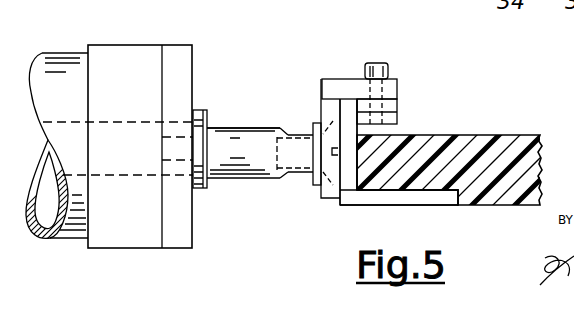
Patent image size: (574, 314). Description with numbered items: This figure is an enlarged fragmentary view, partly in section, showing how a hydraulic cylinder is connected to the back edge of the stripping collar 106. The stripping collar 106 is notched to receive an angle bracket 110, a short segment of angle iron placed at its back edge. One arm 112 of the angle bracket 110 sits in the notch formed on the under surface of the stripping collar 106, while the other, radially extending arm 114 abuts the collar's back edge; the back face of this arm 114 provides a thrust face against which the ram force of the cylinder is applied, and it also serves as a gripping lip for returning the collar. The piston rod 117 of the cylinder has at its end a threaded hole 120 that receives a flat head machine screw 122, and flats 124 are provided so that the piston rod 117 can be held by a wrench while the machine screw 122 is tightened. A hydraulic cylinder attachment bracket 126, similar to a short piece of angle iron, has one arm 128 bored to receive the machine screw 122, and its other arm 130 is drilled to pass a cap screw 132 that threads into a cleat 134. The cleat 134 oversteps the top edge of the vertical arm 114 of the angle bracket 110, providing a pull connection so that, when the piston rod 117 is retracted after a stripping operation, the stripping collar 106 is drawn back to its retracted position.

The stripping collar 106 is at (455, 134).
The angle bracket 110 is at (61, 53).
The arm 112 is at (432, 206).
The radially extending arm 114 is at (346, 106).
The piston rod 117 is at (256, 128).
The threaded hole 120 is at (263, 188).
The flat head machine screw 122 is at (320, 188).
The flats 124 is at (301, 130).
The hydraulic cylinder attachment bracket 126 is at (322, 79).
The arm 128 is at (320, 192).
The arm 130 is at (397, 93).
The cap screw 132 is at (390, 68).
The cleat 134 is at (398, 120).